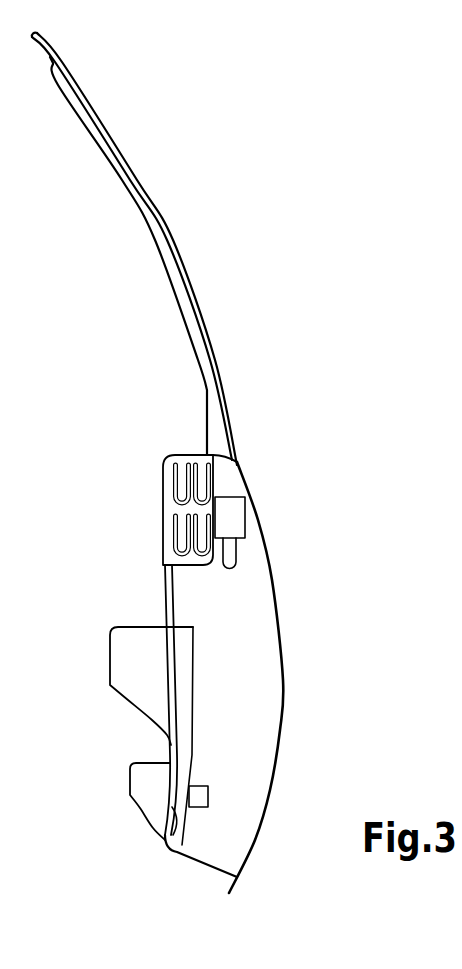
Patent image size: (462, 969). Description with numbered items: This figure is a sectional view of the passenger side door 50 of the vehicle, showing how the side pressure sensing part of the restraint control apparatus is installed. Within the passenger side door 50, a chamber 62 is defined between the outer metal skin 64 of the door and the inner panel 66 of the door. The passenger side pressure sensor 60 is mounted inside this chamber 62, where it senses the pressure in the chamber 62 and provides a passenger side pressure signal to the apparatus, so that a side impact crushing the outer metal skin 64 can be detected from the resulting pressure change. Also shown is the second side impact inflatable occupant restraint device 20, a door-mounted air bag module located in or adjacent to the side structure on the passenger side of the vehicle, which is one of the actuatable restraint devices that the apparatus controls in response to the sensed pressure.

The second side impact inflatable occupant restraint device 20 is at (182, 512).
The passenger side door 50 is at (250, 467).
The passenger side pressure sensor 60 is at (208, 797).
The chamber 62 is at (245, 652).
The outer metal skin 64 is at (280, 735).
The inner panel 66 is at (170, 600).